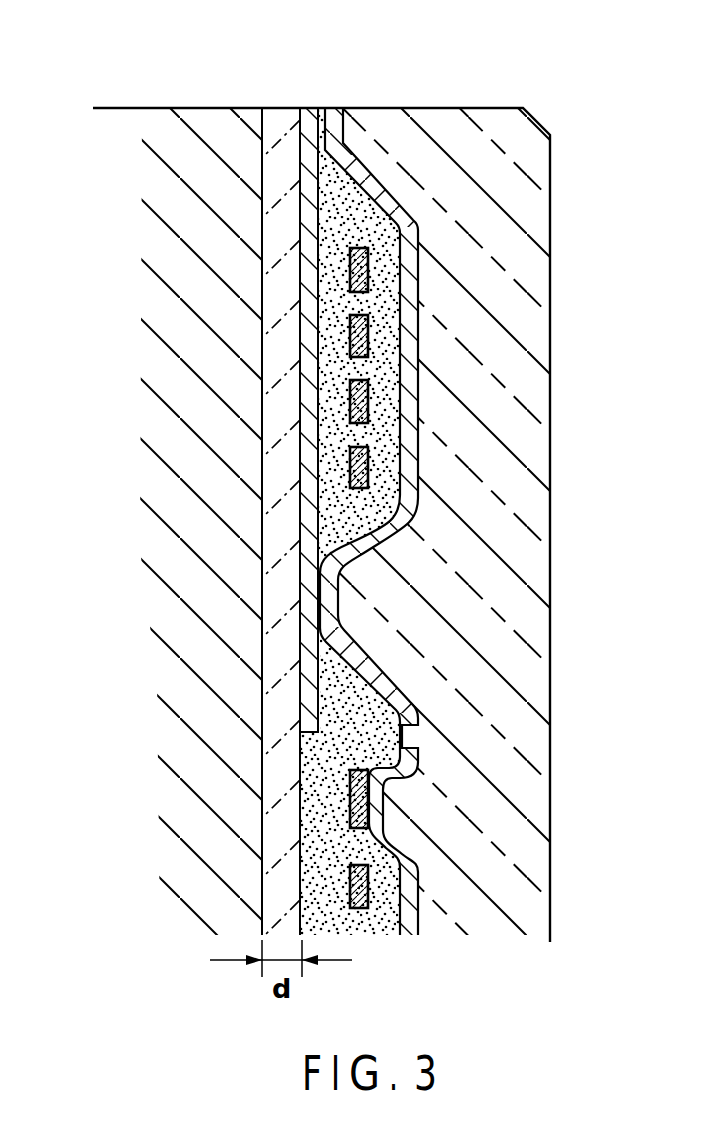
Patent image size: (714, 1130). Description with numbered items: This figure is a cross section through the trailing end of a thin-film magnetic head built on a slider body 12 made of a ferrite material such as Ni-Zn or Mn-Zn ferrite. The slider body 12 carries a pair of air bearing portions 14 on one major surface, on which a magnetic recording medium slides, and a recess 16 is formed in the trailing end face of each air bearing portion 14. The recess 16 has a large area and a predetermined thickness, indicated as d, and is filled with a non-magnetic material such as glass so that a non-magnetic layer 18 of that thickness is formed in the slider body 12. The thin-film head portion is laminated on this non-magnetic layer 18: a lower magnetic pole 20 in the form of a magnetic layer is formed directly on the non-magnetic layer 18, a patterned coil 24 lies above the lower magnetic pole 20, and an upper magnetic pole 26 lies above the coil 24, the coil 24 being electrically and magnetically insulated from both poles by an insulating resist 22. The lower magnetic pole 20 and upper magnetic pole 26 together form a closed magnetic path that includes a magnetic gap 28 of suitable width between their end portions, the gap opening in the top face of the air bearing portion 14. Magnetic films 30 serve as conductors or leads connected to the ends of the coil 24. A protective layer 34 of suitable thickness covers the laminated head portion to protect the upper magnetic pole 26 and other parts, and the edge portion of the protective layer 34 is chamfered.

The slider body 12 is at (128, 513).
The air bearing portion 14 is at (198, 113).
The recess 16 is at (262, 142).
The non-magnetic layer 18 is at (280, 712).
The lower magnetic pole 20 is at (310, 291).
The insulating resist 22 is at (451, 501).
The coil 24 is at (363, 404).
The upper magnetic pole 26 is at (413, 250).
The magnetic gap 28 is at (322, 80).
The magnetic film 30 is at (408, 900).
The protective layer 34 is at (518, 716).